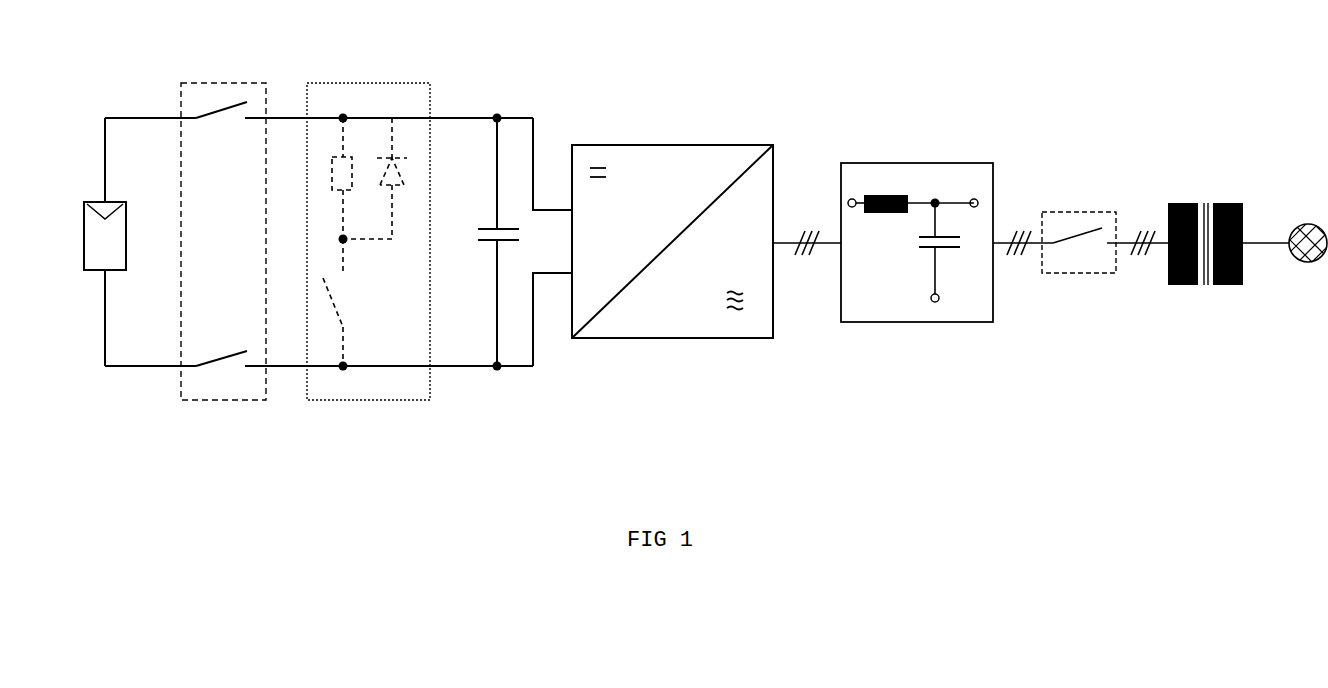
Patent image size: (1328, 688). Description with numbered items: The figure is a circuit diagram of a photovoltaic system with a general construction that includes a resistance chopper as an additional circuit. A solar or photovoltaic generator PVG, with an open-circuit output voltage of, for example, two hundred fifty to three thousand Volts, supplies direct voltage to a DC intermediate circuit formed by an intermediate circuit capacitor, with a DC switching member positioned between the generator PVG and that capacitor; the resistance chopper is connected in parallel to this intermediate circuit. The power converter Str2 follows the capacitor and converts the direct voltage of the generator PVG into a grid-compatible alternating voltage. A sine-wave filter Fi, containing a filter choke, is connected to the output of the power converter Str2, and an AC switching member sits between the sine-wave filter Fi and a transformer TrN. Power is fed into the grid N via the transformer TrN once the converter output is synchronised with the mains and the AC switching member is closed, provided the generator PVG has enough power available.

The photovoltaic generator PVG is at (73, 242).
The power converter Str2 is at (672, 225).
The sine-wave filter Fi is at (917, 226).
The transformer TrN is at (1205, 270).
The grid N is at (1304, 274).